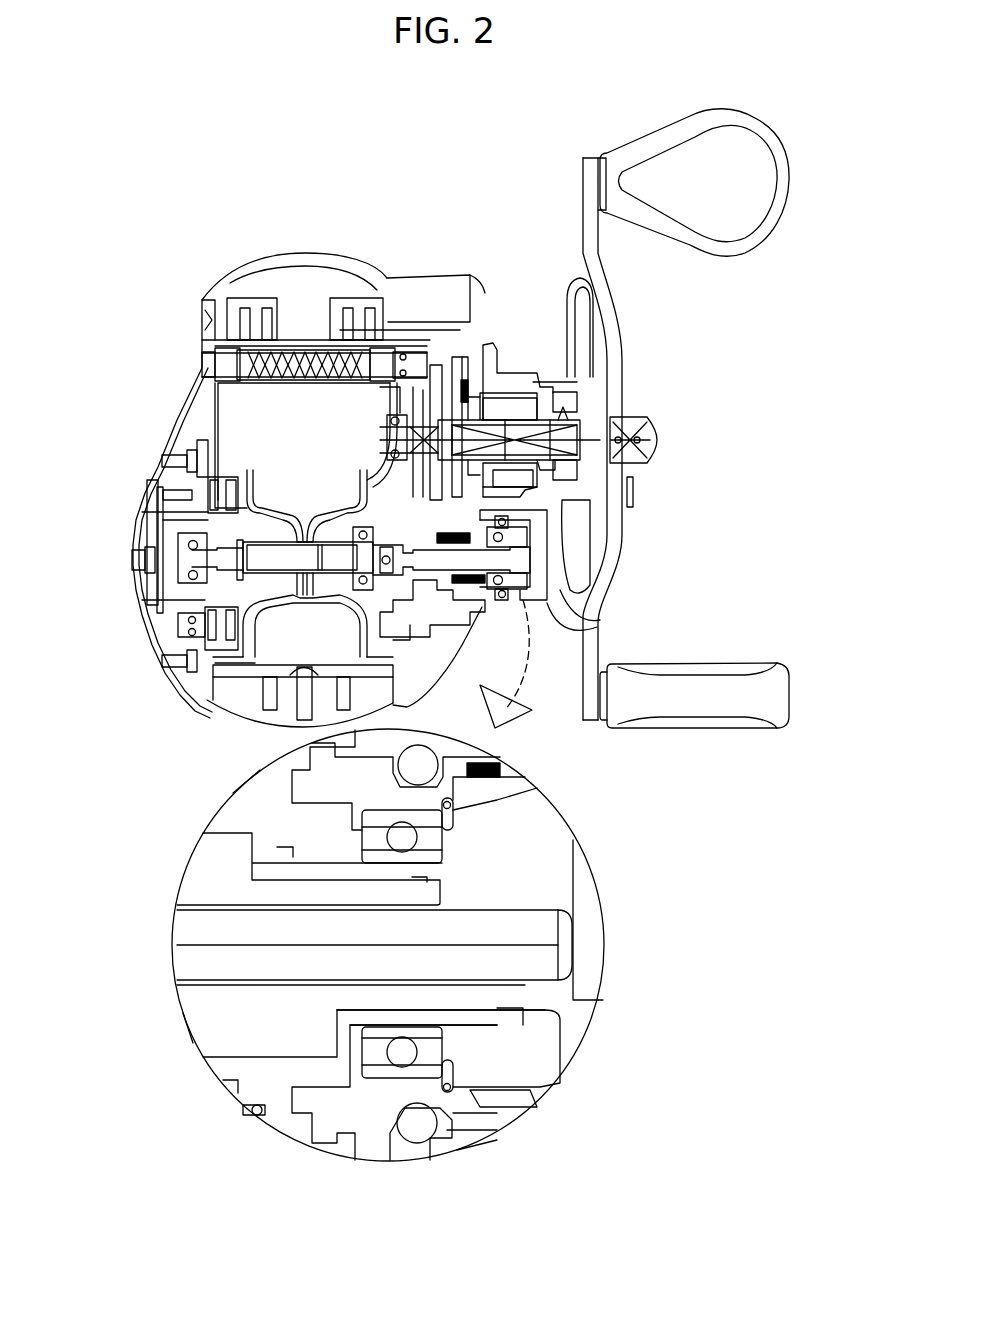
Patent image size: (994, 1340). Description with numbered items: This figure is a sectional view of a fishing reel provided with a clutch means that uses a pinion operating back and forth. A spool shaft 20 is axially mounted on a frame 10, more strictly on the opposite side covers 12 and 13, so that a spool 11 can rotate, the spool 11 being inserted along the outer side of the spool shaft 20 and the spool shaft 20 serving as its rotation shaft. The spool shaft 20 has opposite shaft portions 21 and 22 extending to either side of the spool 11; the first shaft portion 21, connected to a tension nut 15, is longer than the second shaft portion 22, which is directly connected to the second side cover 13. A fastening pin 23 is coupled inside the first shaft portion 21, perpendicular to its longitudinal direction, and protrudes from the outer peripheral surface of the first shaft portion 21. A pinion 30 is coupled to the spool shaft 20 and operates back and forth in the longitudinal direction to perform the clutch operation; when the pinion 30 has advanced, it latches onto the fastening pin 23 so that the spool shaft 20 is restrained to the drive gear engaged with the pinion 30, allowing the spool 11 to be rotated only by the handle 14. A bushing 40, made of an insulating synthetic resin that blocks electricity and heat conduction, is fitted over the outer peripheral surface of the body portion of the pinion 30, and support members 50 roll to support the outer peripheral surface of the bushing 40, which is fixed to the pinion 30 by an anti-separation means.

The frame 10 is at (218, 412).
The spool 11 is at (252, 565).
The first side cover 12 is at (490, 607).
The second side cover 13 is at (180, 452).
The handle 14 is at (735, 663).
The tension nut 15 is at (532, 515).
The spool shaft 20 is at (205, 633).
The first shaft portion 21 is at (510, 558).
The second shaft portion 22 is at (240, 560).
The fastening pin 23 is at (385, 500).
The pinion 30 is at (283, 882).
The bushing 40 is at (445, 873).
The support members 50 is at (433, 837).